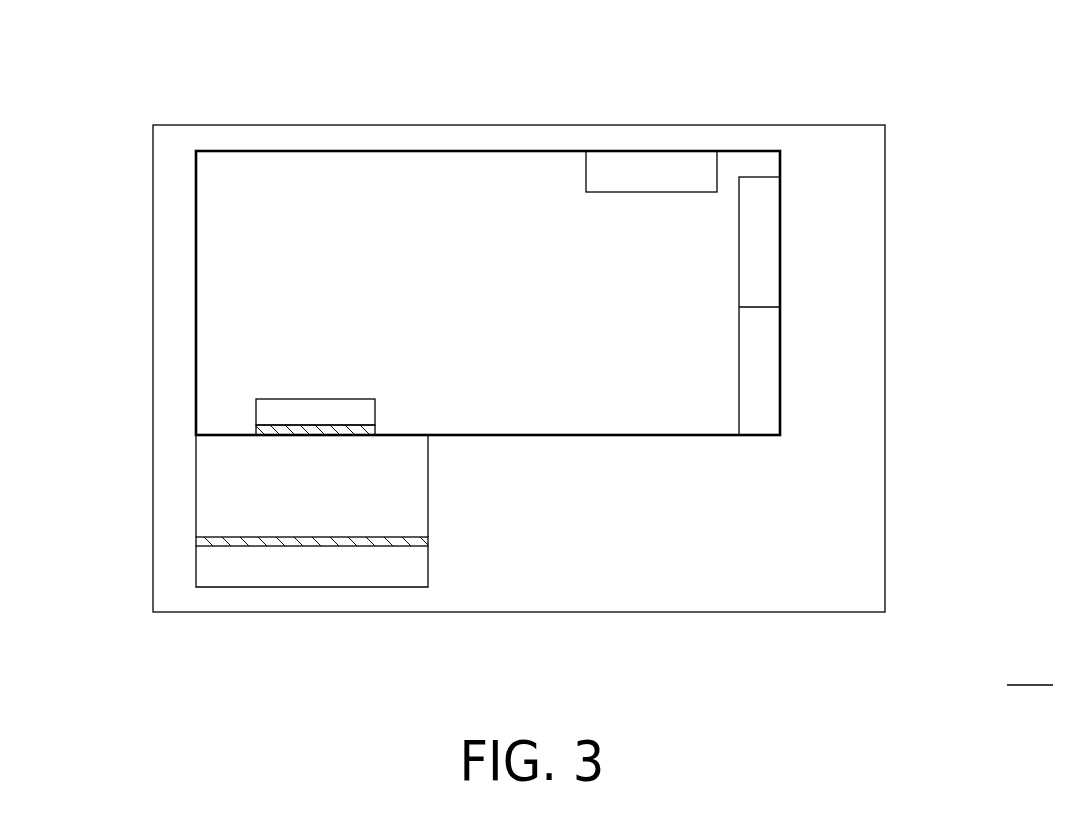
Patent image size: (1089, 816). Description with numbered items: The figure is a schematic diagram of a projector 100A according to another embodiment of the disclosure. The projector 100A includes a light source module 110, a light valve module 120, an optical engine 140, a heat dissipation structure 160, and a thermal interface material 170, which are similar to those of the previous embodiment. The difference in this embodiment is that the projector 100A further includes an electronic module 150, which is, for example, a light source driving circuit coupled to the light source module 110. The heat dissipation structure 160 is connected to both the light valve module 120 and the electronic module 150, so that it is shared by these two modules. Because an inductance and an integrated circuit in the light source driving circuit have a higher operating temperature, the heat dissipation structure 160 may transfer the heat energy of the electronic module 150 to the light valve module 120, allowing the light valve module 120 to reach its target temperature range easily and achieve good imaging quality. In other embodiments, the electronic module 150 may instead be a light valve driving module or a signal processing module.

The projector 100A is at (1030, 673).
The light source module 110 is at (768, 338).
The light valve module 120 is at (337, 407).
The optical engine 140 is at (190, 254).
The electronic module 150 is at (424, 571).
The heat dissipation structure 160 is at (417, 486).
The thermal interface material 170 is at (375, 430).